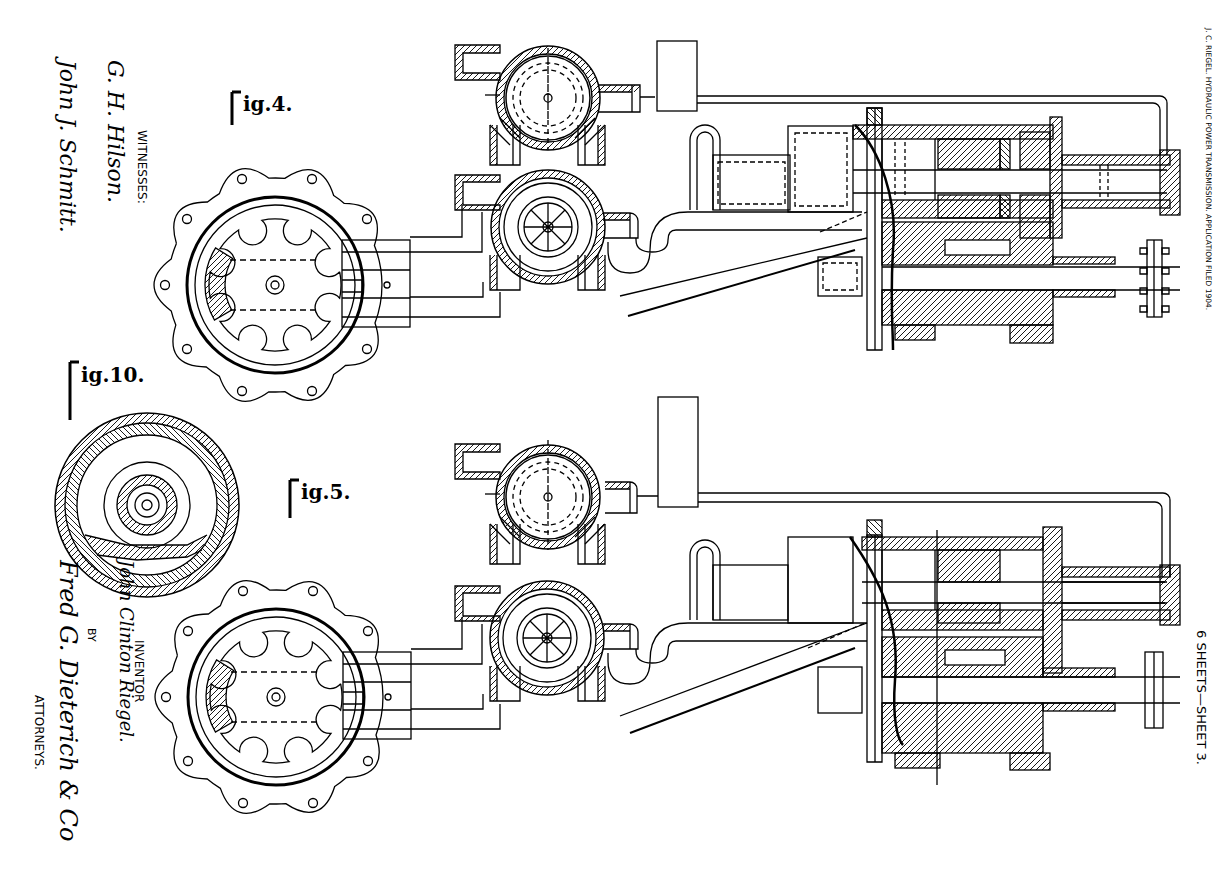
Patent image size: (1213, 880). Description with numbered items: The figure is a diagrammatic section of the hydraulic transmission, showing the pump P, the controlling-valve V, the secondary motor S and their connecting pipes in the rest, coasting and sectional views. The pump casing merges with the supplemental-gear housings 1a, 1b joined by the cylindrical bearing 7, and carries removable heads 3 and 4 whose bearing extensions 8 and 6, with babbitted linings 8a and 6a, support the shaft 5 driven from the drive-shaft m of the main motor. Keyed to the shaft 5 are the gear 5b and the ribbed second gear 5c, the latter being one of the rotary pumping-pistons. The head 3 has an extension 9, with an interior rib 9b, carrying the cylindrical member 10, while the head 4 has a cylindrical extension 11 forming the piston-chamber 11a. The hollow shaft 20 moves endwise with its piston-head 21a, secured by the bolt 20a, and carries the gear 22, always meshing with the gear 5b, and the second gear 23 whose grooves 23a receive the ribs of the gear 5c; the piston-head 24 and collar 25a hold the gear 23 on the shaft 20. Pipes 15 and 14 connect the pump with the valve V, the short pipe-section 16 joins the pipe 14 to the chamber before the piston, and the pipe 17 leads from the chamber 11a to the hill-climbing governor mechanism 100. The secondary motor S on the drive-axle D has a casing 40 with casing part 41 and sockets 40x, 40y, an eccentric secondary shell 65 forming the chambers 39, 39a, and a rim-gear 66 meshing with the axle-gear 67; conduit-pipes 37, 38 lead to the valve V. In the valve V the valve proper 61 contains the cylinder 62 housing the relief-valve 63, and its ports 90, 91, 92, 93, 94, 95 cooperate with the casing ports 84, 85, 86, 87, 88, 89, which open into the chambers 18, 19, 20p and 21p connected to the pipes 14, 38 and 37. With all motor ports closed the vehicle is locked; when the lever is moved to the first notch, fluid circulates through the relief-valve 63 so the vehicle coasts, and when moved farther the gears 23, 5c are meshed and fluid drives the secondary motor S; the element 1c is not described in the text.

In FIG. 5, the supplemental-gear housing 1a is at (870, 745).
In FIG. 5, the supplemental-gear housing 1b is at (1038, 760).
In FIG. 4, the frame plate 1c is at (876, 350).
In FIG. 4, the removable head 3 is at (868, 323).
In FIG. 5, the removable head 3 is at (868, 740).
In FIG. 4, the removable head 4 is at (1053, 236).
In FIG. 5, the removable head 4 is at (1062, 641).
In FIG. 4, the shaft 5 is at (1031, 278).
In FIG. 5, the shaft 5 is at (1135, 695).
In FIG. 4, the gear 5b is at (1030, 335).
In FIG. 5, the gear 5b is at (1025, 760).
In FIG. 4, the second gear 5c is at (920, 332).
In FIG. 5, the second gear 5c is at (925, 757).
In FIG. 4, the bearing extension 6 is at (1080, 300).
In FIG. 5, the bearing extension 6 is at (1088, 712).
In FIG. 4, the babbitted lining 6a is at (1090, 270).
In FIG. 4, the cylindrical bearing 7 is at (985, 300).
In FIG. 5, the cylindrical bearing 7 is at (978, 710).
In FIG. 4, the bearing extension 8 is at (832, 295).
In FIG. 5, the bearing extension 8 is at (840, 690).
In FIG. 5, the babbitted lining 8a is at (935, 650).
In FIG. 4, the extension 9 is at (805, 135).
In FIG. 10, the extension 9 is at (149, 505).
In FIG. 5, the extension 9 is at (820, 580).
In FIG. 10, the rib 9b is at (168, 556).
In FIG. 4, the cylindrical member 10 is at (738, 172).
In FIG. 5, the cylindrical member 10 is at (750, 592).
In FIG. 4, the cylindrical extension 11 is at (1112, 160).
In FIG. 5, the cylindrical extension 11 is at (1120, 568).
In FIG. 5, the cylindrical piston-chamber 11a is at (1085, 575).
In FIG. 4, the pipe 14 is at (702, 226).
In FIG. 5, the pipe 14 is at (702, 636).
In FIG. 4, the pipe 15 is at (718, 278).
In FIG. 5, the pipe 15 is at (708, 692).
In FIG. 4, the short pipe-section 16 is at (690, 175).
In FIG. 5, the short pipe-section 16 is at (690, 578).
In FIG. 4, the pipe 17 is at (1053, 98).
In FIG. 5, the pipe 17 is at (1095, 498).
In FIG. 4, the chamber 18 is at (632, 228).
In FIG. 5, the chamber 18 is at (622, 490).
In FIG. 4, the chamber 19 is at (606, 152).
In FIG. 5, the chamber 19 is at (606, 549).
In FIG. 4, the shaft 20 is at (1016, 182).
In FIG. 10, the shaft 20 is at (155, 493).
In FIG. 5, the shaft 20 is at (1021, 595).
In FIG. 10, the bolt 20a is at (154, 510).
In FIG. 4, the chamber 20p is at (492, 153).
In FIG. 5, the chamber 20p is at (492, 553).
In FIG. 4, the piston-head 21a is at (1125, 195).
In FIG. 5, the piston-head 21a is at (1125, 620).
In FIG. 4, the chamber 21p is at (468, 54).
In FIG. 5, the chamber 21p is at (470, 455).
In FIG. 4, the gear 22 is at (1055, 150).
In FIG. 5, the gear 22 is at (1052, 600).
In FIG. 4, the second gear 23 is at (948, 145).
In FIG. 5, the second gear 23 is at (957, 550).
In FIG. 4, the grooves 23a is at (997, 159).
In FIG. 4, the piston-head 24 is at (900, 145).
In FIG. 10, the piston-head 24 is at (138, 505).
In FIG. 5, the piston-head 24 is at (895, 555).
In FIG. 10, the collar 25a is at (129, 461).
In FIG. 4, the conduit-pipe 37 is at (462, 234).
In FIG. 5, the conduit-pipe 37 is at (462, 648).
In FIG. 4, the conduit-pipe 38 is at (478, 306).
In FIG. 5, the conduit-pipe 38 is at (462, 718).
In FIG. 4, the chamber 39 is at (275, 281).
In FIG. 5, the chamber 39 is at (276, 693).
In FIG. 4, the chamber 39a is at (277, 343).
In FIG. 5, the chamber 39a is at (274, 756).
In FIG. 5, the casing 40 is at (154, 659).
In FIG. 4, the socket 40x is at (156, 268).
In FIG. 4, the socket 40y is at (376, 270).
In FIG. 5, the socket 40y is at (377, 681).
In FIG. 4, the casing part 41 is at (268, 273).
In FIG. 5, the casing part 41 is at (269, 685).
In FIG. 4, the valve proper 61 is at (546, 296).
In FIG. 5, the valve proper 61 is at (535, 455).
In FIG. 4, the cylinder 62 is at (586, 214).
In FIG. 5, the cylinder 62 is at (585, 625).
In FIG. 4, the relief-valve 63 is at (548, 231).
In FIG. 5, the relief-valve 63 is at (540, 600).
In FIG. 4, the secondary shell 65 is at (278, 276).
In FIG. 5, the secondary shell 65 is at (281, 690).
In FIG. 4, the rim-gear 66 is at (233, 285).
In FIG. 5, the rim-gear 66 is at (246, 664).
In FIG. 4, the gear 67 is at (275, 258).
In FIG. 5, the gear 67 is at (276, 674).
In FIG. 4, the port 84 is at (612, 226).
In FIG. 5, the port 84 is at (612, 630).
In FIG. 4, the port 85 is at (500, 273).
In FIG. 5, the port 85 is at (500, 684).
In FIG. 4, the port 86 is at (502, 188).
In FIG. 5, the port 86 is at (502, 598).
In FIG. 4, the port 87 is at (605, 130).
In FIG. 5, the port 87 is at (605, 528).
In FIG. 4, the port 88 is at (492, 130).
In FIG. 5, the port 88 is at (492, 527).
In FIG. 4, the port 89 is at (512, 52).
In FIG. 5, the port 89 is at (508, 453).
In FIG. 4, the port 90 is at (500, 97).
In FIG. 5, the port 90 is at (500, 494).
In FIG. 4, the port 91 is at (595, 92).
In FIG. 5, the port 91 is at (595, 487).
In FIG. 4, the port 92 is at (565, 285).
In FIG. 5, the port 92 is at (562, 696).
In FIG. 4, the port 93 is at (580, 190).
In FIG. 5, the port 93 is at (612, 605).
In FIG. 4, the port 94 is at (522, 286).
In FIG. 5, the port 94 is at (525, 712).
In FIG. 4, the port 95 is at (540, 190).
In FIG. 5, the port 95 is at (565, 592).
In FIG. 4, the hill-climbing governor mechanism 100 is at (677, 76).
In FIG. 5, the hill-climbing governor mechanism 100 is at (678, 452).
In FIG. 4, the drive-axle D is at (281, 285).
In FIG. 5, the drive-axle D is at (282, 698).
In FIG. 4, the secondary motor S is at (329, 165).
In FIG. 5, the secondary motor S is at (335, 592).
In FIG. 4, the pump P is at (970, 344).
In FIG. 10, the pump P is at (237, 434).
In FIG. 5, the pump P is at (970, 756).
In FIG. 4, the controlling-valve V is at (557, 98).
In FIG. 5, the controlling-valve V is at (557, 494).
In FIG. 4, the drive-shaft m is at (1180, 272).
In FIG. 5, the drive-shaft m is at (1180, 682).